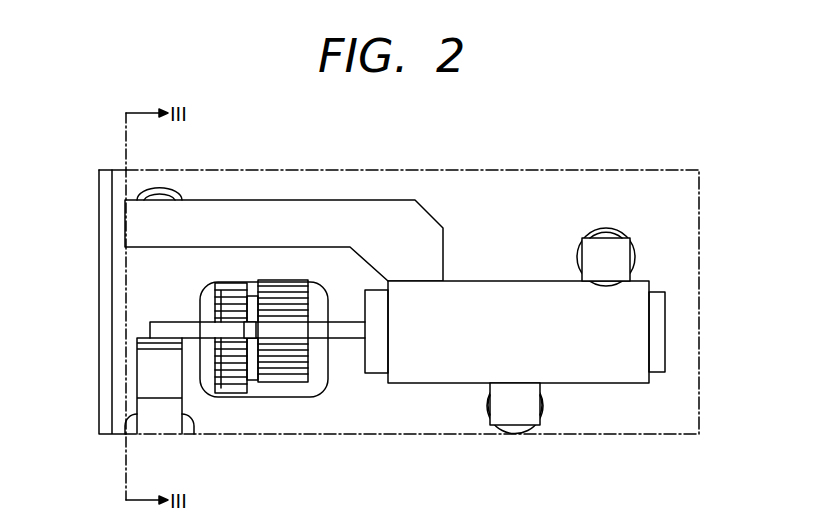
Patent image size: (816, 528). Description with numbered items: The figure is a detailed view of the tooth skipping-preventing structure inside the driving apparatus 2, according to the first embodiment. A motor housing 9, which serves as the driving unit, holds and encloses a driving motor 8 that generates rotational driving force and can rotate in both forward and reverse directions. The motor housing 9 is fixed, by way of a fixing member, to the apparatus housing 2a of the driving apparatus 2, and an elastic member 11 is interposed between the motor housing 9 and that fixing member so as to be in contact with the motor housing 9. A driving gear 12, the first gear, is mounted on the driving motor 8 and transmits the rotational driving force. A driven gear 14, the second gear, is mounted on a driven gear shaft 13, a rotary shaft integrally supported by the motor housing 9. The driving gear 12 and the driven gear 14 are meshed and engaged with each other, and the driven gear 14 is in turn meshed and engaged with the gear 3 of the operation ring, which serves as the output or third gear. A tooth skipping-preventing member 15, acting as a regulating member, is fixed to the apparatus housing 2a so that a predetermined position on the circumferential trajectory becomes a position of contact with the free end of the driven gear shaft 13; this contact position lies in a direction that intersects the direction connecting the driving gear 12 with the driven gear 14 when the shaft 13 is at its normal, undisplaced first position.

The driving apparatus 2 is at (483, 170).
The apparatus housing 2a is at (338, 372).
The gear 3 is at (200, 287).
The driving motor 8 is at (660, 313).
The motor housing 9 is at (604, 365).
The elastic member 11 is at (610, 230).
The driving gear 12 is at (281, 370).
The driven gear shaft 13 is at (343, 327).
The driven gear 14 is at (247, 358).
The tooth skipping-preventing member 15 is at (147, 360).